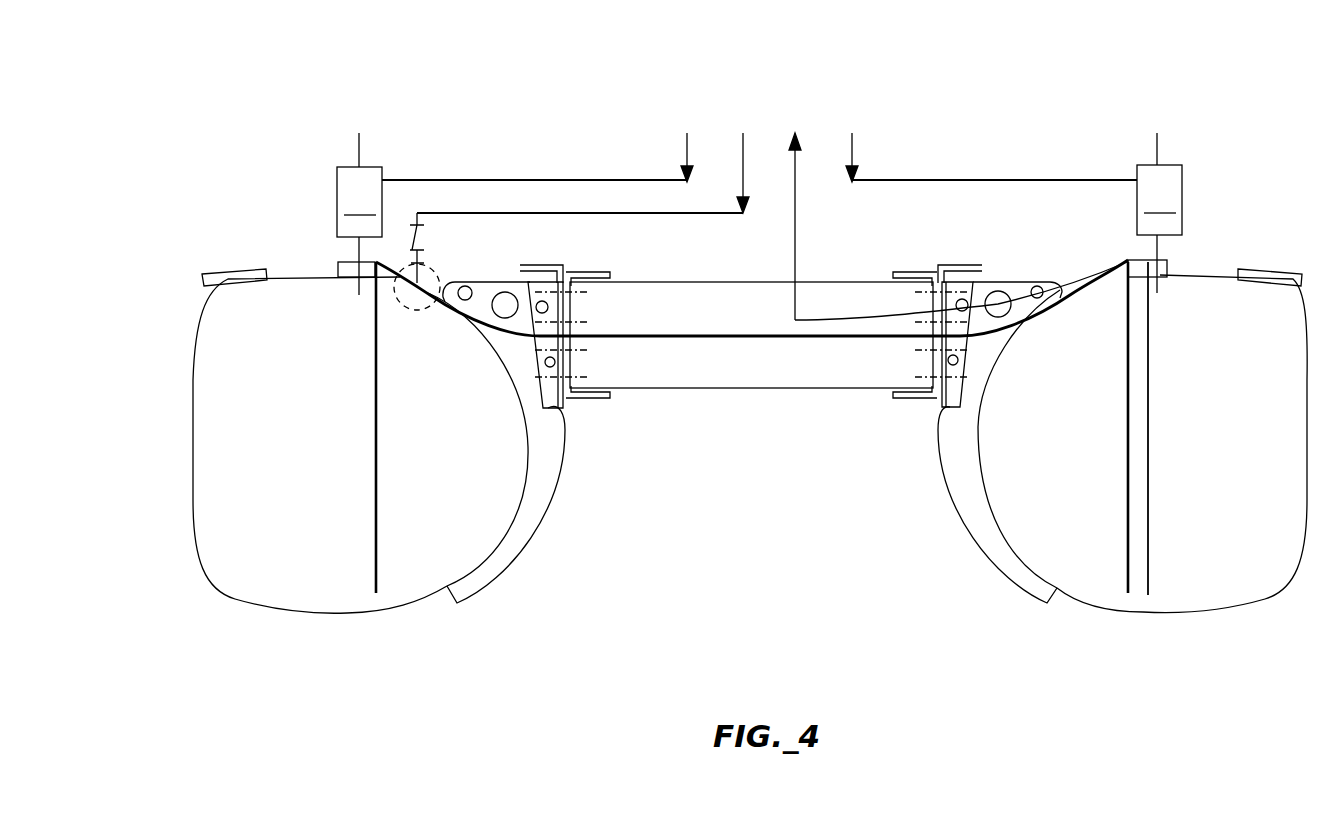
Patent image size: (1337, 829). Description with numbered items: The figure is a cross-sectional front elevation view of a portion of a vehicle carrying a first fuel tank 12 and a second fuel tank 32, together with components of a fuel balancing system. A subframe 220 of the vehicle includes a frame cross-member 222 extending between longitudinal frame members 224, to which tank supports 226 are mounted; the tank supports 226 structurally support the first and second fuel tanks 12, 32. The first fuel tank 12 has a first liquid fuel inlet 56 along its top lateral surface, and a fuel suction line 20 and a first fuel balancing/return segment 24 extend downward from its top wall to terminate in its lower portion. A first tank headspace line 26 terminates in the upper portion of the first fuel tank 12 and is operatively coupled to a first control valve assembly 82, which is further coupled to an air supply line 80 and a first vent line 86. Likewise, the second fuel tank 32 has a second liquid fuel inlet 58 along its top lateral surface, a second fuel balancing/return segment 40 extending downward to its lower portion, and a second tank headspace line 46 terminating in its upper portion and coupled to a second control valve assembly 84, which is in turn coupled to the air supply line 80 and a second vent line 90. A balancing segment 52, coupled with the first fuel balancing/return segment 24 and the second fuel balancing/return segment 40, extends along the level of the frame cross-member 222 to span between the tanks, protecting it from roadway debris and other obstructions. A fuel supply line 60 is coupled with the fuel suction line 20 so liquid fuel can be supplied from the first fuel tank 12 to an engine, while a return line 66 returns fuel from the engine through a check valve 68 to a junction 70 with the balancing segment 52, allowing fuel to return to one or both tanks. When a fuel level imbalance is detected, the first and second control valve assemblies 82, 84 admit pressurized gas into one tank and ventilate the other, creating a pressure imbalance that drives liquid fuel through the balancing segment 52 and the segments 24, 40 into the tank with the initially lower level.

The first fuel tank 12 is at (1230, 605).
The fuel suction line 20 is at (1150, 413).
The first fuel balancing/return segment 24 is at (1125, 445).
The first tank headspace line 26 is at (1160, 282).
The second fuel tank 32 is at (262, 605).
The second fuel balancing/return segment 40 is at (377, 443).
The second tank headspace line 46 is at (355, 287).
The balancing segment 52 is at (733, 337).
The first liquid fuel inlet 56 is at (1270, 267).
The second liquid fuel inlet 58 is at (232, 268).
The fuel supply line 60 is at (797, 198).
The return line 66 is at (665, 215).
The check valve 68 is at (423, 227).
The junction 70 is at (423, 307).
The air supply line 80 is at (535, 178).
The first control valve assembly 82 is at (1159, 184).
The second control valve assembly 84 is at (359, 185).
The first vent line 86 is at (1163, 147).
The second vent line 90 is at (355, 150).
The subframe 220 is at (930, 505).
The frame cross-member 222 is at (665, 390).
The longitudinal frame members 224 is at (562, 263).
The tank supports 226 is at (542, 533).